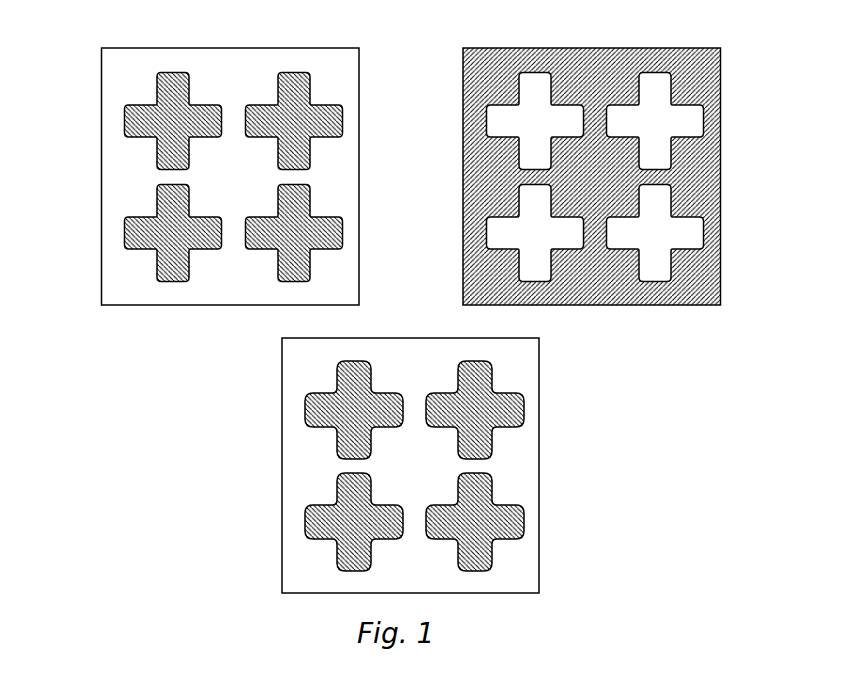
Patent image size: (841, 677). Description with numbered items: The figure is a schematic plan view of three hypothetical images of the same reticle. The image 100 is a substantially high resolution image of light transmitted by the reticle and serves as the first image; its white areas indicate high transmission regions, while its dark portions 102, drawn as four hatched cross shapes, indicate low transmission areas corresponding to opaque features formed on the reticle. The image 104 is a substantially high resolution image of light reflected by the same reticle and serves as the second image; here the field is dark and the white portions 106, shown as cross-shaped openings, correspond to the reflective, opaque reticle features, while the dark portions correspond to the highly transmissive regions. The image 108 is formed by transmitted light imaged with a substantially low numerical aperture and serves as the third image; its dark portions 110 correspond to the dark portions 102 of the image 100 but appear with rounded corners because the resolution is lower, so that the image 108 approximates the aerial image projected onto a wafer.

The image 100 is at (101, 118).
The dark portions 102 is at (122, 235).
The image 104 is at (720, 112).
The white portions 106 is at (658, 88).
The image 108 is at (539, 420).
The dark portions 110 is at (515, 395).